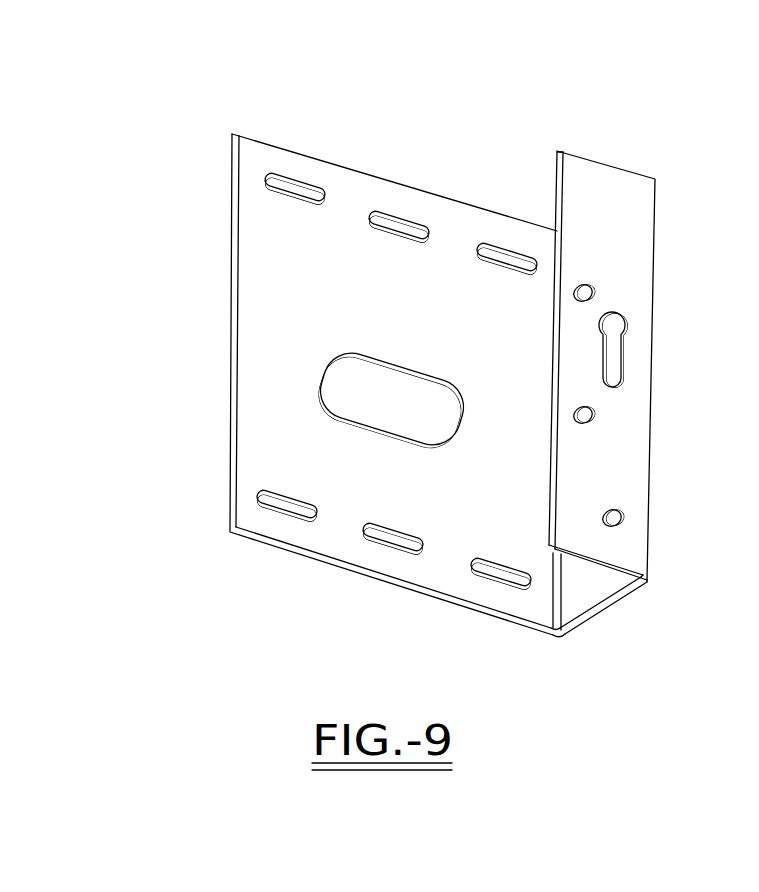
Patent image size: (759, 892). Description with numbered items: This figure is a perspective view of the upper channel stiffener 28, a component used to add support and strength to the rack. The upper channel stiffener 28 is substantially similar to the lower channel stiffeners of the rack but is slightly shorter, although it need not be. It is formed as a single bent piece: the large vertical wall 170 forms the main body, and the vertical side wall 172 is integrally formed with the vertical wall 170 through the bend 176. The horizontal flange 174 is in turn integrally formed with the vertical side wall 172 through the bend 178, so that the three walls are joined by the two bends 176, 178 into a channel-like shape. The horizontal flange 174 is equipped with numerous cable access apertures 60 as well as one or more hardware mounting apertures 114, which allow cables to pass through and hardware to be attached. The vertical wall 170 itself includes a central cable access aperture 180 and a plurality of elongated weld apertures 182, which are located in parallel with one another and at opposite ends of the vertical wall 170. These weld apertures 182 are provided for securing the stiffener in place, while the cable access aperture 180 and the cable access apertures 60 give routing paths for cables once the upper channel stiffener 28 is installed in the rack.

The upper channel stiffener 28 is at (397, 138).
The vertical wall 170 is at (277, 292).
The vertical side wall 172 is at (597, 588).
The horizontal flange 174 is at (615, 178).
The bend 176 is at (554, 636).
The bend 178 is at (647, 581).
The cable access aperture 180 is at (335, 388).
The elongated weld apertures 182 is at (307, 192).
The cable access apertures 60 is at (595, 292).
The hardware mounting apertures 114 is at (608, 330).